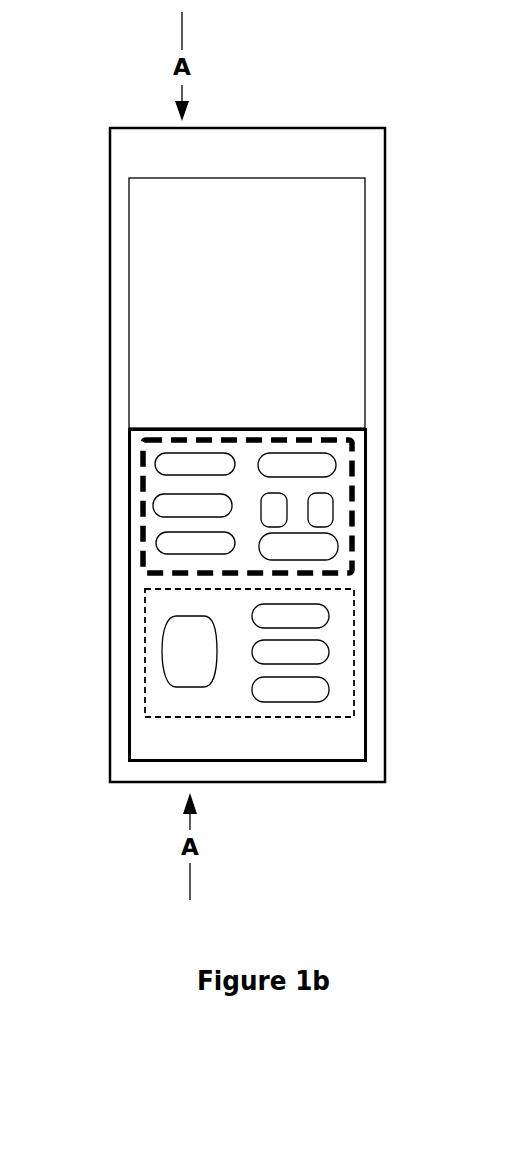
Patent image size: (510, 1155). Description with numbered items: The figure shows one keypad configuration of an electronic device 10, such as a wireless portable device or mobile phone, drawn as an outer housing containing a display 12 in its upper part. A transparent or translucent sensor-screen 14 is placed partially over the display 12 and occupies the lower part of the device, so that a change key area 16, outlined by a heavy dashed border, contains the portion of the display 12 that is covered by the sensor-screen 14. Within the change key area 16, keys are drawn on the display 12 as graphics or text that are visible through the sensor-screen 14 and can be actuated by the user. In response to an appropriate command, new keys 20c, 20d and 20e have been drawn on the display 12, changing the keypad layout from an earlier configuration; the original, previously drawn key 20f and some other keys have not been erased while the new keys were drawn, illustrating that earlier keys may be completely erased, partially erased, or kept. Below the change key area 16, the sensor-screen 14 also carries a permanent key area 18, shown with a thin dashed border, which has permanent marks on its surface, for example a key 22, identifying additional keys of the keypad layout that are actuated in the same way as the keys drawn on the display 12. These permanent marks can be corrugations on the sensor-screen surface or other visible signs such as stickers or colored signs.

The electronic device 10 is at (245, 128).
The display 12 is at (363, 303).
The transparent or translucent sensor-screen 14 is at (250, 761).
The change key area 16 is at (353, 505).
The permanent key area 18 is at (354, 652).
The key 20c is at (157, 543).
The key 20d is at (153, 506).
The key 20e is at (157, 463).
The key 20f is at (325, 452).
The key 22 is at (163, 652).